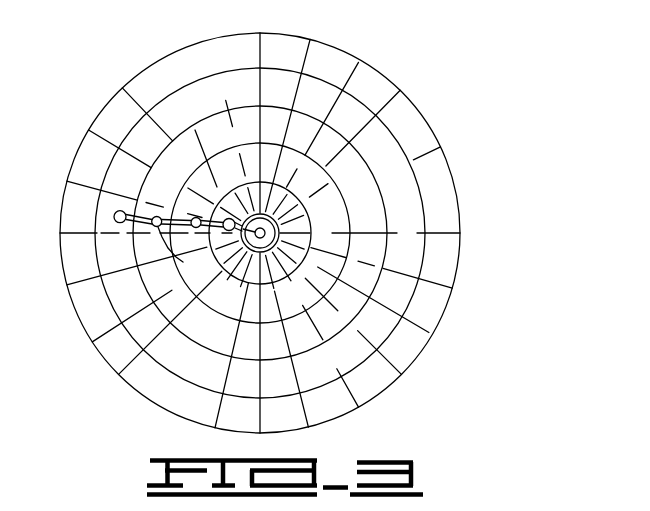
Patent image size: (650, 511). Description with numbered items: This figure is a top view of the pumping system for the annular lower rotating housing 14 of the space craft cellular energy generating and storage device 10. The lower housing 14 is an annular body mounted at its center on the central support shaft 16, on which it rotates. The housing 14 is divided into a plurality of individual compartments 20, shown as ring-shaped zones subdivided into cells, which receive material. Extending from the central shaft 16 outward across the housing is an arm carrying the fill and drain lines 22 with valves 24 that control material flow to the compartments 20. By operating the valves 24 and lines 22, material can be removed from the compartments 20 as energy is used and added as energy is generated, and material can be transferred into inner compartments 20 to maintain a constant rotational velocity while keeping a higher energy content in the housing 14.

The space craft cellular energy generating and storage device 10 is at (420, 63).
The annular lower rotating housing 14 is at (460, 204).
The central support shaft 16 is at (335, 231).
The individual compartments 20 is at (275, 233).
The fill and drain lines 22 is at (184, 215).
The valves 24 is at (207, 242).